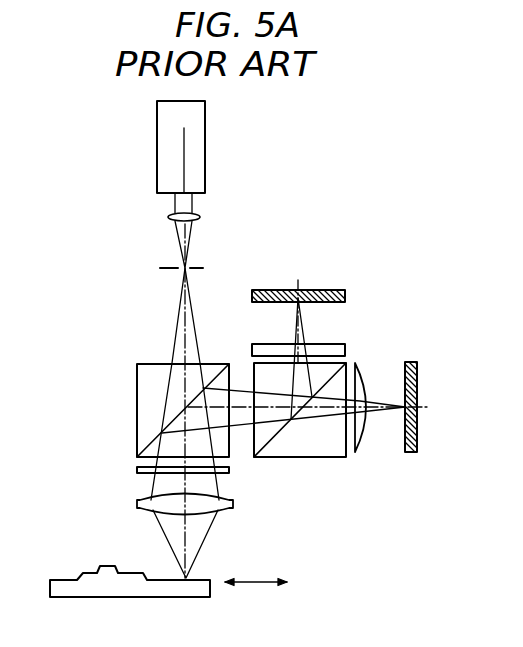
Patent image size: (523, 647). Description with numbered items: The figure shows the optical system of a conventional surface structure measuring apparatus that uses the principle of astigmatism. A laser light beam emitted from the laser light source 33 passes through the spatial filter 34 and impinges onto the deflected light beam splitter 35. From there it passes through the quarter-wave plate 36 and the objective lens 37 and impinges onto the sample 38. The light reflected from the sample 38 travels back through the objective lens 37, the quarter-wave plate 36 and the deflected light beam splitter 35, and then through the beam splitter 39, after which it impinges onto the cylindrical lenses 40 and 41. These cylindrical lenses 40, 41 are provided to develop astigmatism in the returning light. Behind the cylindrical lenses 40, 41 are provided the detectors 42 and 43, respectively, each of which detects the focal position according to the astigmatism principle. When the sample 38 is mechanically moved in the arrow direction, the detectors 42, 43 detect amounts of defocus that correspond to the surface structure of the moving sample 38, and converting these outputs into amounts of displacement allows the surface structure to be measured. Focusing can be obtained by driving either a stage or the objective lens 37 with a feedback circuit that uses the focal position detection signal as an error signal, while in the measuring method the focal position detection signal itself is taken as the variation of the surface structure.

The laser light source 33 is at (157, 153).
The spatial filter 34 is at (172, 266).
The deflected light beam splitter 35 is at (137, 386).
The λ/4 plate 36 is at (137, 470).
The objective lens 37 is at (137, 504).
The sample 38 is at (66, 580).
The beam splitter 39 is at (266, 446).
The cylindrical lens 40 is at (362, 449).
The cylindrical lens 41 is at (263, 344).
The detector 42 is at (411, 453).
The detector 43 is at (322, 290).